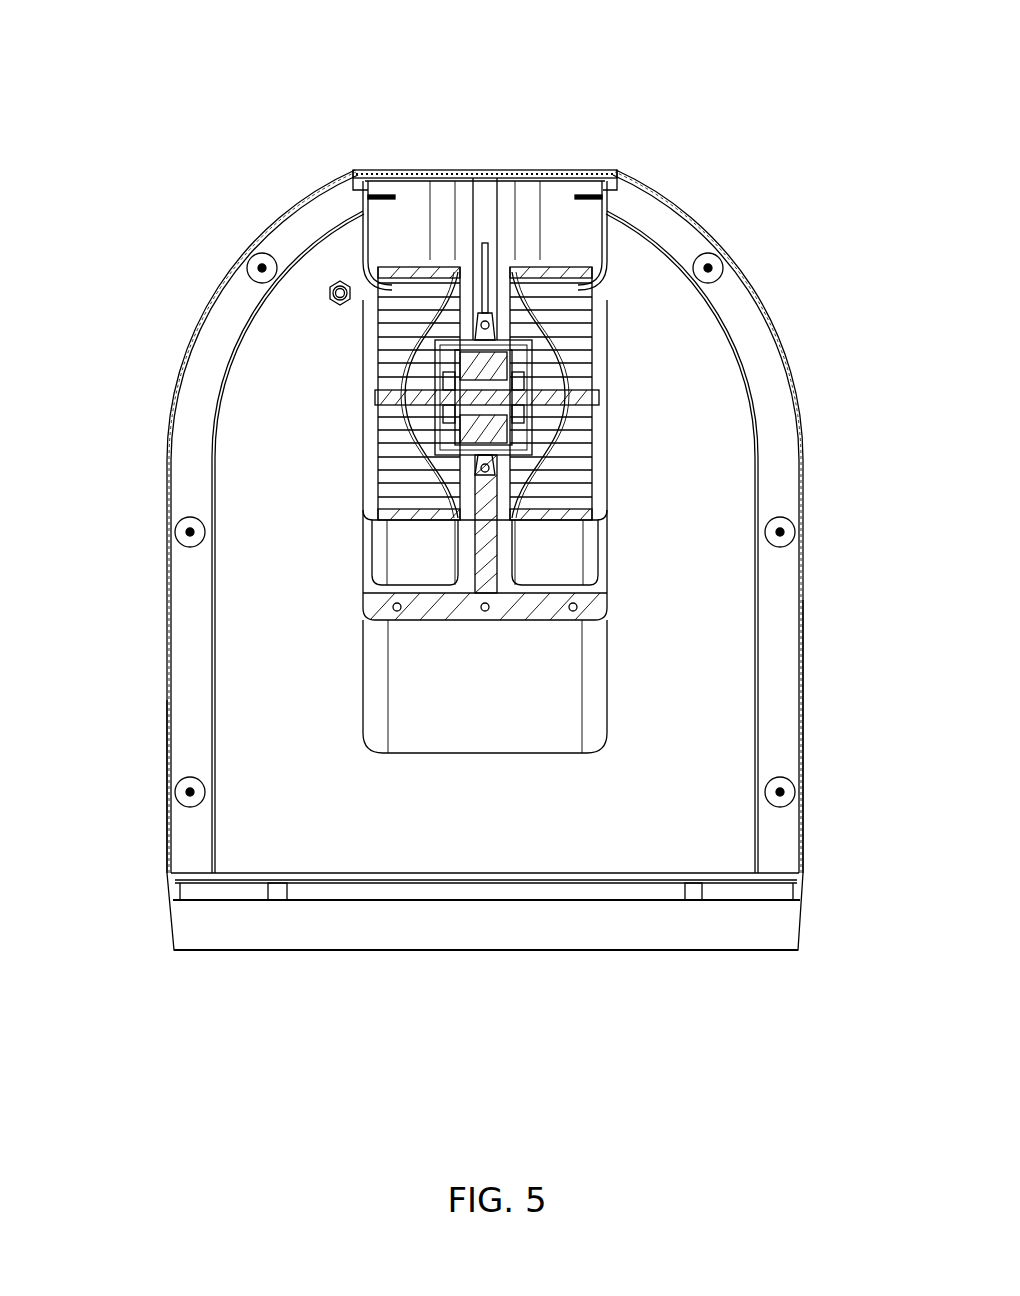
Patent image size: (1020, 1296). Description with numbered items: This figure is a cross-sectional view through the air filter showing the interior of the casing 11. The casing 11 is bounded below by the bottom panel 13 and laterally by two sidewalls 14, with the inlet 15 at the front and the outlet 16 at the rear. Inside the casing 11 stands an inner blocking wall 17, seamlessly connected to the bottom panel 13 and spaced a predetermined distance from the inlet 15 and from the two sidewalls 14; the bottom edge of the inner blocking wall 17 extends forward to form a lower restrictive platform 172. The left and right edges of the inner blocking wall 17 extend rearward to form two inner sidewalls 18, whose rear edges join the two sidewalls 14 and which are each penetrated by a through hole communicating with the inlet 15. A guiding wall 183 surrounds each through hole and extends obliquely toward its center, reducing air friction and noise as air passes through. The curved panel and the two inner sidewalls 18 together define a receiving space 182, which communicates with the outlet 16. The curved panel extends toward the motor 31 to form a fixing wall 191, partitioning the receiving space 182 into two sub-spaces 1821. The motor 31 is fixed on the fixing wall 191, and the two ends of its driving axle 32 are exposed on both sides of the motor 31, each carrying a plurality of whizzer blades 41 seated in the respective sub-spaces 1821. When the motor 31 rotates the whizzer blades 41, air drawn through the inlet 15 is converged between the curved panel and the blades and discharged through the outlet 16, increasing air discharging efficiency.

The casing 11 is at (160, 578).
The bottom panel 13 is at (717, 518).
The sidewalls 14 is at (165, 632).
The inlet 15 is at (494, 950).
The outlet 16 is at (553, 160).
The inner blocking wall 17 is at (543, 620).
The inner sidewalls 18 is at (367, 232).
The motor 31 is at (445, 345).
The driving axle 32 is at (375, 399).
The whizzer blades 41 is at (388, 450).
The lower restrictive platform 172 is at (553, 718).
The receiving space 182 is at (553, 70).
The guiding wall 183 is at (360, 338).
The fixing wall 191 is at (497, 557).
The sub-spaces 1821 is at (450, 218).